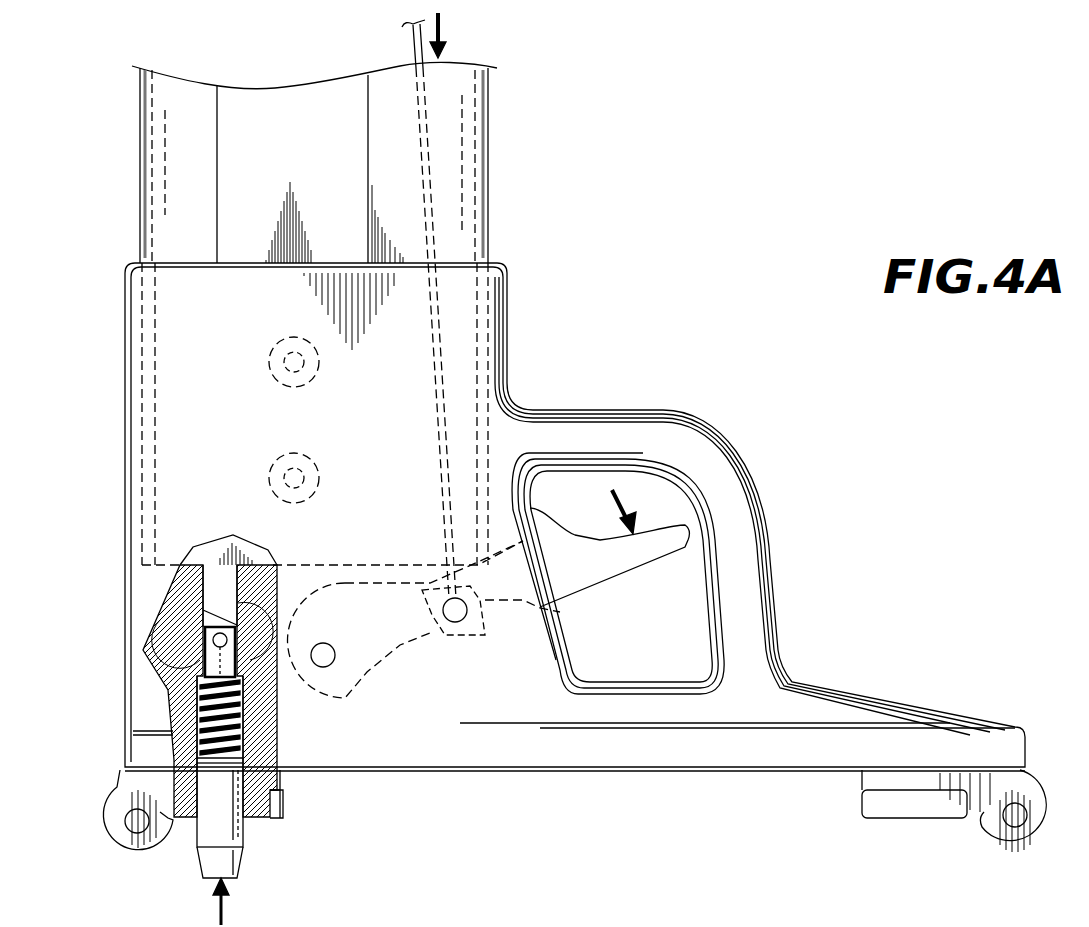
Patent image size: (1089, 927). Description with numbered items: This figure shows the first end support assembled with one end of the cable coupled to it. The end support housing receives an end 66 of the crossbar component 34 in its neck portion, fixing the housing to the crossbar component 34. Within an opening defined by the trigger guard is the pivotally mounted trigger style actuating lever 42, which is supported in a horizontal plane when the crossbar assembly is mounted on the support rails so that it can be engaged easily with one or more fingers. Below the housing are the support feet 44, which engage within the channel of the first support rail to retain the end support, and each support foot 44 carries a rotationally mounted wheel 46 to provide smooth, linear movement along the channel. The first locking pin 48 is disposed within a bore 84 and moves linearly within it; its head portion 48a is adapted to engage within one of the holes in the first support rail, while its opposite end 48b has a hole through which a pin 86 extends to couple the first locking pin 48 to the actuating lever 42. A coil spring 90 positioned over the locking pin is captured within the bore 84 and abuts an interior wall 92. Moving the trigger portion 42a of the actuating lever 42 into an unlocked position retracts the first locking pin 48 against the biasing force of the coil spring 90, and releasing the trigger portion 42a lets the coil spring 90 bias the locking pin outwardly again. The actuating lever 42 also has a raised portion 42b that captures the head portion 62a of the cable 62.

The crossbar component 34 is at (503, 110).
The end of the crossbar component 66 is at (178, 155).
The cable 62 is at (430, 178).
The head portion of cable 62a is at (470, 633).
The actuating lever 42 is at (406, 653).
The trigger portion 42a is at (645, 558).
The raised portion 42b is at (560, 612).
The support foot 44 is at (283, 802).
The wheel 46 is at (100, 818).
The first locking pin 48 is at (248, 830).
The head portion of the first locking pin 48a is at (238, 860).
The opposite end of the first locking pin 48b is at (222, 628).
The bore 84 is at (242, 716).
The pin 86 is at (221, 642).
The coil spring 90 is at (200, 740).
The interior wall 92 is at (200, 688).